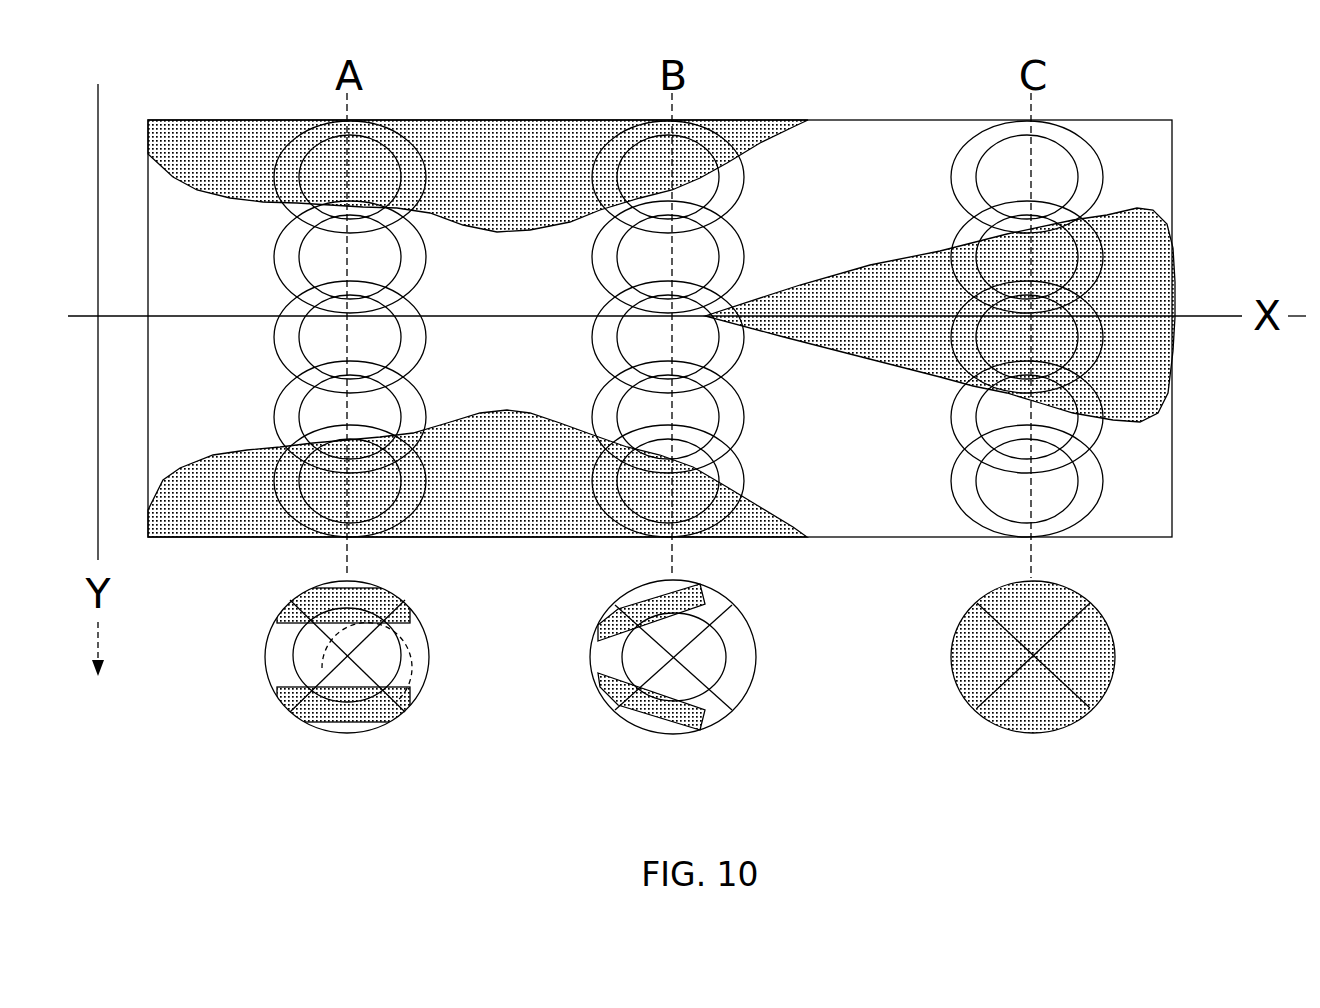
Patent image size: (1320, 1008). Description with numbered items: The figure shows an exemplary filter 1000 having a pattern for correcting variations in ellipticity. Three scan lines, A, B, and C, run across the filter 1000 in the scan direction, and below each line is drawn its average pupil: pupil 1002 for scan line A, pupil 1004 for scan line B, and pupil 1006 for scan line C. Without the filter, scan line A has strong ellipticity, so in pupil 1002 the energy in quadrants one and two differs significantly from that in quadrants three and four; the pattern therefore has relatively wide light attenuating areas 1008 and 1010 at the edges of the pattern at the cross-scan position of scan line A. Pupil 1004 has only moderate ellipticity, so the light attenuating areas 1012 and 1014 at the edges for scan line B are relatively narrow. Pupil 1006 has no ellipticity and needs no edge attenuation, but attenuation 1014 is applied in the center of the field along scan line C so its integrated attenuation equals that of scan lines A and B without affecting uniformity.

The filter 1000 is at (1166, 120).
The pupil 1002 is at (270, 680).
The pupil 1004 is at (591, 666).
The pupil 1006 is at (957, 678).
The light attenuating area 1008 is at (347, 155).
The light attenuating area 1010 is at (347, 488).
The light attenuating area 1012 is at (672, 167).
The light attenuating area 1014 is at (1030, 269).